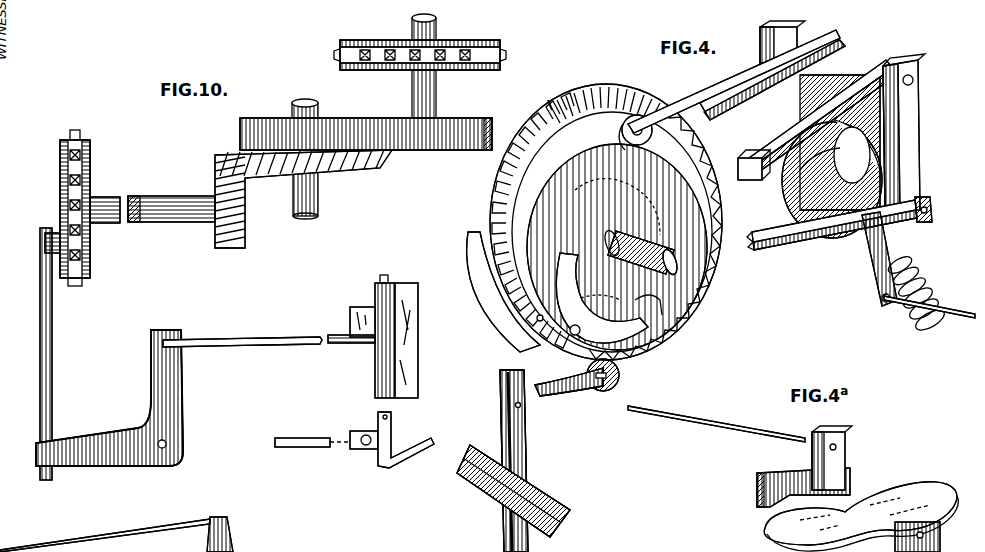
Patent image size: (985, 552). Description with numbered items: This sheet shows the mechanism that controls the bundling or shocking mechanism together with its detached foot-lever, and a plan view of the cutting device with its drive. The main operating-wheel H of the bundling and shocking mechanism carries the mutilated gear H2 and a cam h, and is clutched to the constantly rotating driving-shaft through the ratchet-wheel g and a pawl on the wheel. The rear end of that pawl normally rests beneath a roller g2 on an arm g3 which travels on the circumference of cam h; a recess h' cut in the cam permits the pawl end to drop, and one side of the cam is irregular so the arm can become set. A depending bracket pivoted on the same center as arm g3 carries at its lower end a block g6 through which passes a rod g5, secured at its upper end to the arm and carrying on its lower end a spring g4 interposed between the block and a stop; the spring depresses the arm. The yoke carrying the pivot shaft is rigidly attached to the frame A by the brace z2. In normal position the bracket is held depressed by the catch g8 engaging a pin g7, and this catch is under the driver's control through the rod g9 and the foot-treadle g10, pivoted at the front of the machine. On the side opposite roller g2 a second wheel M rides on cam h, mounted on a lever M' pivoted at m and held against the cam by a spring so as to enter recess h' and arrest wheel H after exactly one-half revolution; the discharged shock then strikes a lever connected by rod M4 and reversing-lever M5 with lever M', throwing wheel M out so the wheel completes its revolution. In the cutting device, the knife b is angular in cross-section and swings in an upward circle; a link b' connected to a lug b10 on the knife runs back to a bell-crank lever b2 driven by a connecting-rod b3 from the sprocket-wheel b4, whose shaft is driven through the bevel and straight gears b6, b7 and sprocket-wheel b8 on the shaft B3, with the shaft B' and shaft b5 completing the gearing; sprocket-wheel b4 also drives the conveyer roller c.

In FIG. 10, the shaft B3 is at (437, 24).
In FIG. 10, the sprocket-wheel b8 is at (466, 70).
In FIG. 10, the shaft B' is at (315, 155).
In FIG. 10, the straight gear b7 is at (443, 150).
In FIG. 10, the bevel gear b6 is at (303, 199).
In FIG. 10, the shaft b5 is at (171, 209).
In FIG. 10, the sprocket-wheel b4 is at (90, 156).
In FIG. 10, the connecting-rod b3 is at (54, 354).
In FIG. 10, the bell-crank lever b2 is at (119, 398).
In FIG. 10, the link b' is at (256, 383).
In FIG. 10, the knife b is at (404, 336).
In FIG. 10, the lug b10 is at (368, 308).
In FIG. 4, the rod M4 is at (105, 531).
In FIG. 4, the reversing-lever M5 is at (235, 548).
In FIG. 4, the foot-treadle g10 is at (792, 28).
In FIG. 4a, the foot-treadle g10 is at (912, 484).
In FIG. 4, the catch g8 is at (832, 156).
In FIG. 4, the lug or block g6 is at (772, 81).
In FIG. 4, the rod g5 is at (782, 130).
In FIG. 4, the post g'' is at (913, 133).
In FIG. 4, the pin g7 is at (782, 186).
In FIG. 4, the brace or supporting bar z2 is at (800, 250).
In FIG. 4, the spring g4 is at (906, 286).
In FIG. 4, the rod g9 is at (945, 309).
In FIG. 4, the ratchet-wheel g is at (607, 222).
In FIG. 4, the main operating-wheel H is at (527, 220).
In FIG. 4, the mutilated gear H2 is at (548, 112).
In FIG. 4, the cam h is at (617, 247).
In FIG. 4, the roller c is at (640, 243).
In FIG. 4, the recess h' is at (648, 299).
In FIG. 4, the roller g2 is at (648, 118).
In FIG. 4, the arm or lever g3 is at (745, 95).
In FIG. 4, the wheel M is at (562, 314).
In FIG. 4, the lever M' is at (530, 461).
In FIG. 4, the pivot m is at (535, 496).
In FIG. 4, the frame A is at (497, 477).